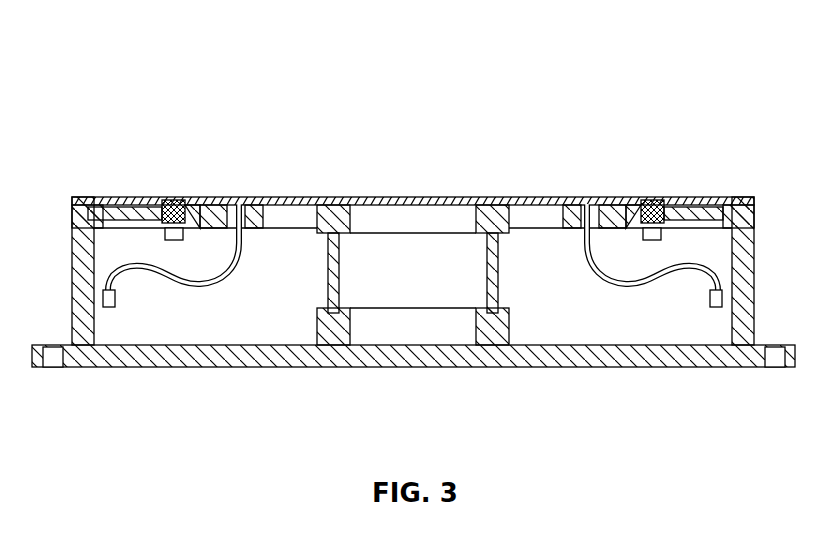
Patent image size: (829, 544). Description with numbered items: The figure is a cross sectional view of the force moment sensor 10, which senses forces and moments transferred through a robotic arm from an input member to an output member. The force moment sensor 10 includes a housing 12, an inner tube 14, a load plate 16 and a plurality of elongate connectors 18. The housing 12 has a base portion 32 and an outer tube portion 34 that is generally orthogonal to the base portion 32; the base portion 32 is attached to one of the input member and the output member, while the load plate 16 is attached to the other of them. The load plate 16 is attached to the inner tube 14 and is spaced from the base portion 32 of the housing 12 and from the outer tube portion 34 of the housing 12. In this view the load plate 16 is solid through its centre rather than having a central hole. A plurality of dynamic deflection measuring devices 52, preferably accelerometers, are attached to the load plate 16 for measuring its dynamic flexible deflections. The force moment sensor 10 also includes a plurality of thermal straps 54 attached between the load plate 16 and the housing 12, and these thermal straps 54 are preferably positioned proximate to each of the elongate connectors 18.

The force moment sensor 10 is at (425, 133).
The housing 12 is at (195, 358).
The inner tube 14 is at (500, 275).
The load plate 16 is at (490, 206).
The elongate connectors 18 is at (127, 213).
The base portion 32 is at (33, 368).
The outer tube portion 34 is at (72, 278).
The dynamic deflection measuring devices 52 is at (654, 234).
The thermal straps 54 is at (202, 282).